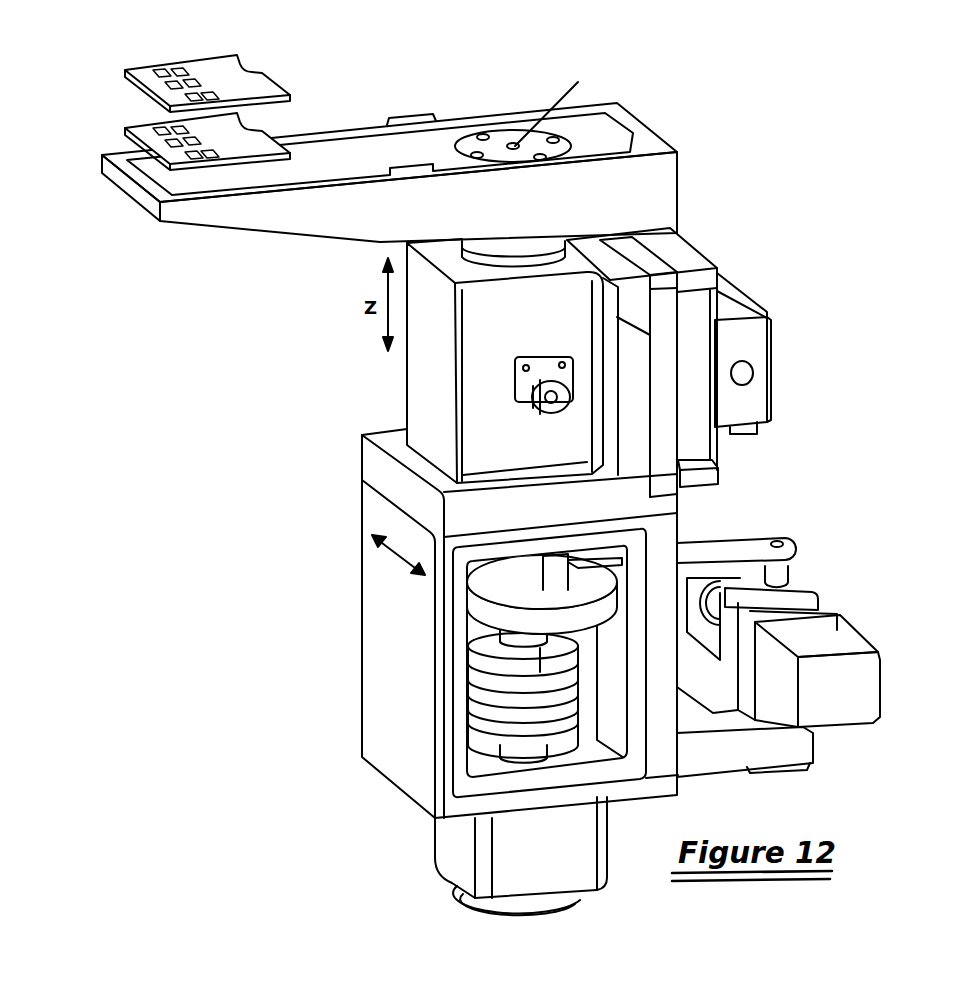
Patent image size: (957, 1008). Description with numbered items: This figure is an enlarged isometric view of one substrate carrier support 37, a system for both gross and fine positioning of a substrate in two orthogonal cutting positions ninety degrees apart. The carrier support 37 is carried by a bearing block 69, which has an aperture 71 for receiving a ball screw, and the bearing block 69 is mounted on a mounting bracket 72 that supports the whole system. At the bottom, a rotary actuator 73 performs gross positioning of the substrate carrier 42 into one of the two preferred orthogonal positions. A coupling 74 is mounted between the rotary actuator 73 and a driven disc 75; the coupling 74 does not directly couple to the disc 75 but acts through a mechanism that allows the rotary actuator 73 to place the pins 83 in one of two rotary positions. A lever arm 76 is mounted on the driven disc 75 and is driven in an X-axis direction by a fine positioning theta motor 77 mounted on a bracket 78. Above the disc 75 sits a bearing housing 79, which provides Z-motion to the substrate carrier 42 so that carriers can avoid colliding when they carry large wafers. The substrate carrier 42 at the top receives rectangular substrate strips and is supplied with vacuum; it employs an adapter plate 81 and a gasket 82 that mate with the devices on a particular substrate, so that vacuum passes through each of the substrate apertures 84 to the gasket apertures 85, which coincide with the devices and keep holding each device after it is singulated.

The carrier support 37 is at (380, 400).
The substrate carrier 42 is at (668, 179).
The bearing block 69 is at (763, 400).
The aperture 71 is at (745, 372).
The mounting bracket 72 is at (653, 265).
The rotary actuator 73 is at (513, 845).
The coupling 74 is at (515, 708).
The driven disc 75 is at (487, 607).
The lever arm 76 is at (788, 557).
The fine positioning theta motor 77 is at (862, 682).
The bracket 78 is at (783, 742).
The bearing housing 79 is at (473, 392).
The adapter plate 81 is at (251, 79).
The gasket 82 is at (263, 133).
The pins 83 is at (560, 568).
The substrate apertures 84 is at (136, 135).
The gasket apertures 85 is at (139, 82).